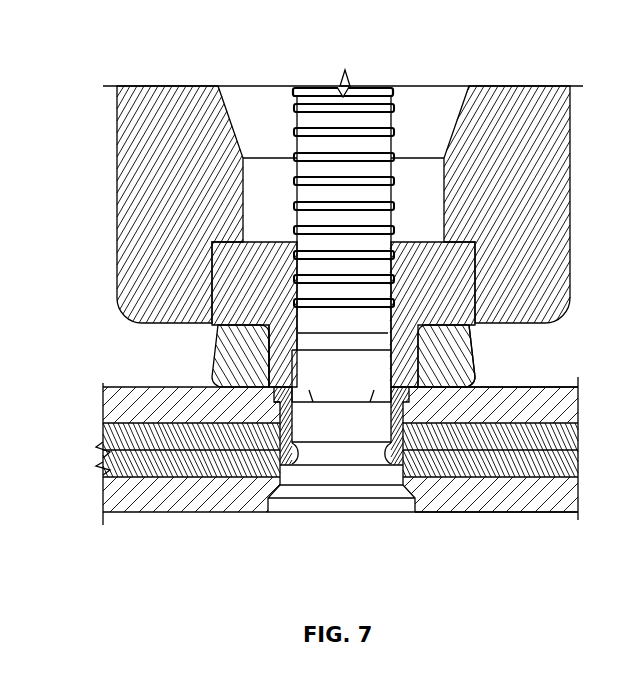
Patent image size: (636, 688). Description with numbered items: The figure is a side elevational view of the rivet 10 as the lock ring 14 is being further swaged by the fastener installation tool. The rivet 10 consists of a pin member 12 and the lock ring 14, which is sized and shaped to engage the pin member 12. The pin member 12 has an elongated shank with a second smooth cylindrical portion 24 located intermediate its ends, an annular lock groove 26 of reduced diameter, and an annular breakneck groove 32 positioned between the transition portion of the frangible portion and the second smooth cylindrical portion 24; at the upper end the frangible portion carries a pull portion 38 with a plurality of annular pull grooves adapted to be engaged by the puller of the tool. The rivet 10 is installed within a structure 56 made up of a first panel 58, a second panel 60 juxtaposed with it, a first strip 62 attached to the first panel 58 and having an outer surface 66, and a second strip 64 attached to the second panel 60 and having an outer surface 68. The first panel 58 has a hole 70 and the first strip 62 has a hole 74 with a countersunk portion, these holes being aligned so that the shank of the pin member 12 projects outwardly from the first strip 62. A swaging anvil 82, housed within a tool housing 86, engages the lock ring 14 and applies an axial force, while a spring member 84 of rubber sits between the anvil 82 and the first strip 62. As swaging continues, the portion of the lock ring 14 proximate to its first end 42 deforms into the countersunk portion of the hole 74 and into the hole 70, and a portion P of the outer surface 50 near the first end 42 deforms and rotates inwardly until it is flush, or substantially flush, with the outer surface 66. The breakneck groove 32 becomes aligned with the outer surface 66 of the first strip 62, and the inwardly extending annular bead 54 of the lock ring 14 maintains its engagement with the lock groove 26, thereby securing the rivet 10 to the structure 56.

The rivet 10 is at (296, 472).
The pin member 12 is at (347, 478).
The lock ring 14 is at (543, 394).
The second smooth cylindrical portion 24 is at (368, 322).
The annular lock groove 26 is at (318, 453).
The annular breakneck groove 32 is at (343, 396).
The pull portion 38 is at (393, 135).
The first end 42 is at (476, 378).
The outer surface 50 is at (281, 400).
The annular bead 54 is at (393, 453).
The structure 56 is at (302, 448).
The first panel 58 is at (112, 438).
The second panel 60 is at (108, 465).
The first strip 62 is at (127, 407).
The second strip 64 is at (110, 492).
The outer surface 66 is at (153, 388).
The outer surface 68 is at (498, 513).
The hole 70 is at (276, 400).
The hole 74 is at (275, 389).
The swaging anvil 82 is at (250, 257).
The spring member 84 is at (447, 336).
The tool housing 86 is at (165, 110).
The portion P is at (279, 404).